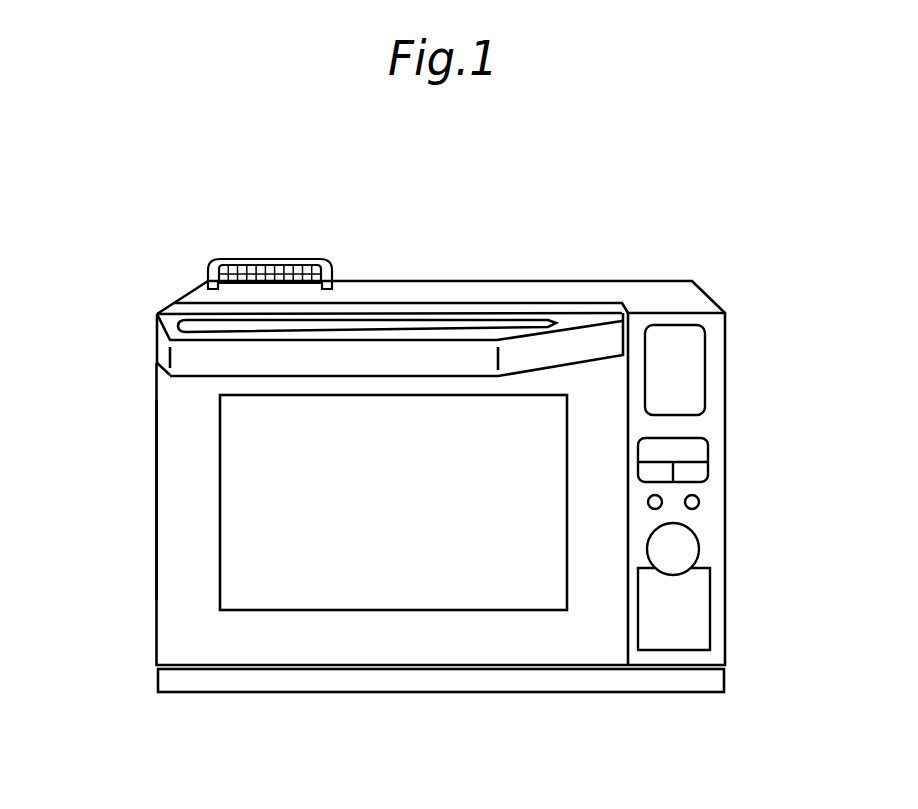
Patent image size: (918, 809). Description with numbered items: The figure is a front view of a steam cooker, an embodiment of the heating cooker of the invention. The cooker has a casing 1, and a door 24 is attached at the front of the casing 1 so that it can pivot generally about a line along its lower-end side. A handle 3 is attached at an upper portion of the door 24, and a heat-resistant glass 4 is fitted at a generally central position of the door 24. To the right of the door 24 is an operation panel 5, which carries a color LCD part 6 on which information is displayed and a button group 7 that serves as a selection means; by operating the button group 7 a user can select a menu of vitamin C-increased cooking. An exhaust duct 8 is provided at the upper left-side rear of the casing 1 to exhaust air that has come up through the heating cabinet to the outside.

The casing 1 is at (525, 292).
The handle 3 is at (385, 352).
The heat-resistant glass 4 is at (237, 507).
The operation panel 5 is at (737, 525).
The color LCD part 6 is at (688, 368).
The button group 7 is at (692, 452).
The exhaust duct 8 is at (283, 258).
The door 24 is at (155, 572).